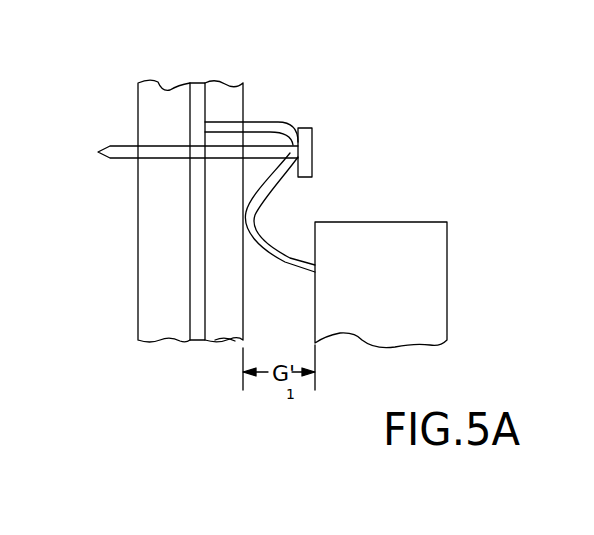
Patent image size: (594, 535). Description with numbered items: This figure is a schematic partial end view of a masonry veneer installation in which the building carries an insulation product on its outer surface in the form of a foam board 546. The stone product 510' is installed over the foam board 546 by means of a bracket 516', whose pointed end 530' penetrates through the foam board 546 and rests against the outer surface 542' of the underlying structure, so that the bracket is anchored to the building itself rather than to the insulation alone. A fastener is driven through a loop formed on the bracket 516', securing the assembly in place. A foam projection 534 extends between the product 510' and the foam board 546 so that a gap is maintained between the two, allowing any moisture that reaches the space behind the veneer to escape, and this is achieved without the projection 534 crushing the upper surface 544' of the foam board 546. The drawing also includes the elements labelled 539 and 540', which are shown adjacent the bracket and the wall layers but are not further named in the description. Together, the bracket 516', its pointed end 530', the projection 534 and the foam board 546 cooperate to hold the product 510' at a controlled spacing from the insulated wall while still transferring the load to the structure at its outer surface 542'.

The product 510' is at (428, 277).
The bracket 516' is at (316, 109).
The pointed end 530' is at (251, 84).
The projection 534 is at (245, 222).
The wall panel 539 is at (148, 292).
The retainer plate 540' is at (363, 161).
The outer surface of the structure 542' is at (217, 170).
The upper surface of the foam board 544' is at (270, 191).
The foam board 546 is at (230, 320).